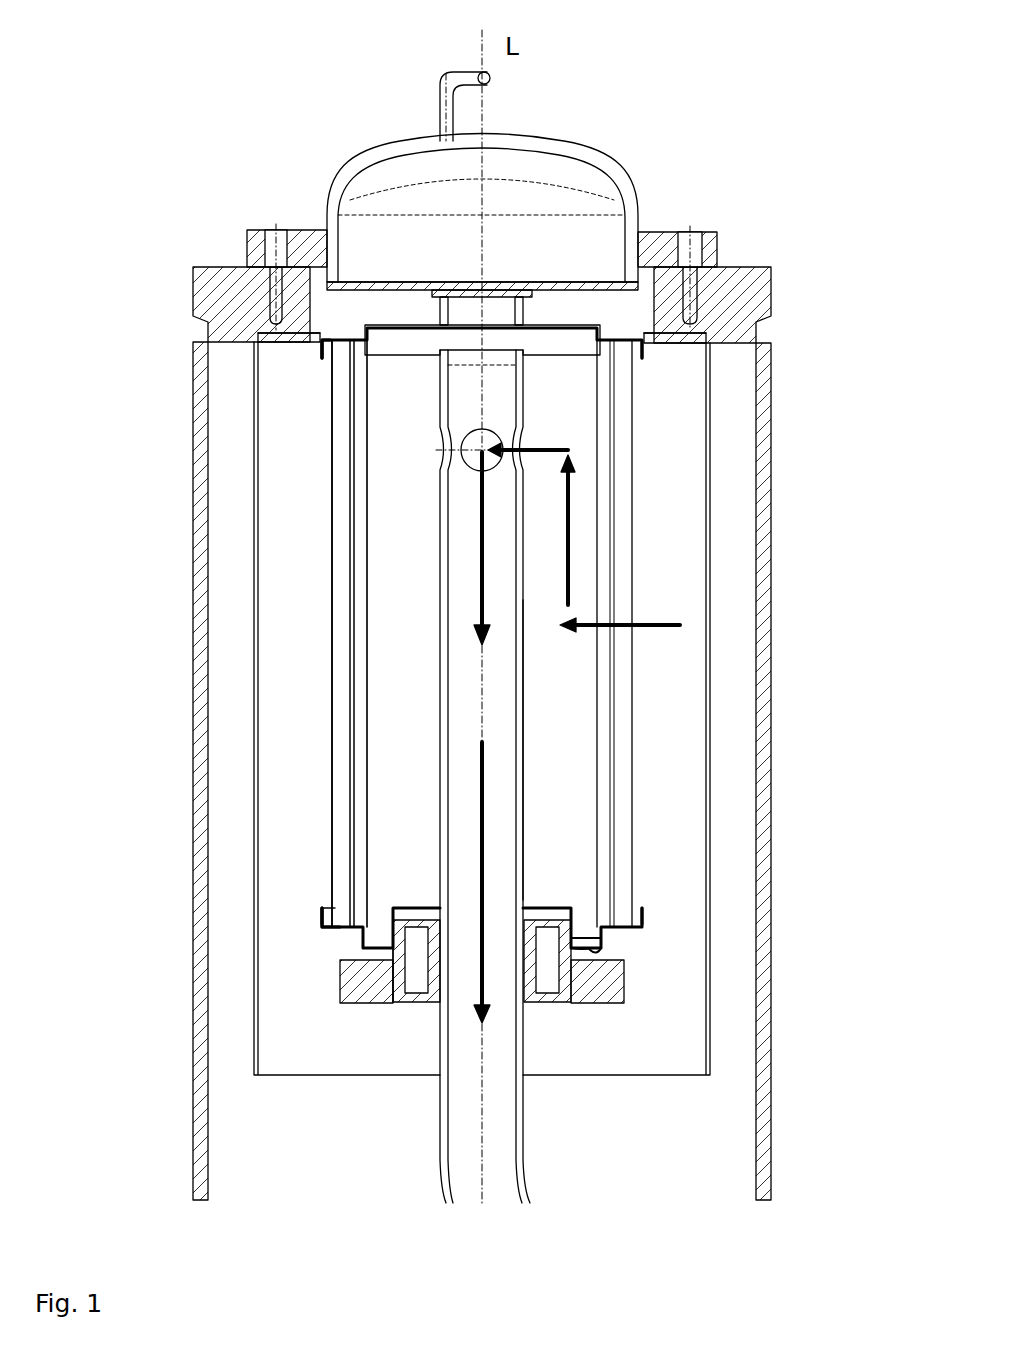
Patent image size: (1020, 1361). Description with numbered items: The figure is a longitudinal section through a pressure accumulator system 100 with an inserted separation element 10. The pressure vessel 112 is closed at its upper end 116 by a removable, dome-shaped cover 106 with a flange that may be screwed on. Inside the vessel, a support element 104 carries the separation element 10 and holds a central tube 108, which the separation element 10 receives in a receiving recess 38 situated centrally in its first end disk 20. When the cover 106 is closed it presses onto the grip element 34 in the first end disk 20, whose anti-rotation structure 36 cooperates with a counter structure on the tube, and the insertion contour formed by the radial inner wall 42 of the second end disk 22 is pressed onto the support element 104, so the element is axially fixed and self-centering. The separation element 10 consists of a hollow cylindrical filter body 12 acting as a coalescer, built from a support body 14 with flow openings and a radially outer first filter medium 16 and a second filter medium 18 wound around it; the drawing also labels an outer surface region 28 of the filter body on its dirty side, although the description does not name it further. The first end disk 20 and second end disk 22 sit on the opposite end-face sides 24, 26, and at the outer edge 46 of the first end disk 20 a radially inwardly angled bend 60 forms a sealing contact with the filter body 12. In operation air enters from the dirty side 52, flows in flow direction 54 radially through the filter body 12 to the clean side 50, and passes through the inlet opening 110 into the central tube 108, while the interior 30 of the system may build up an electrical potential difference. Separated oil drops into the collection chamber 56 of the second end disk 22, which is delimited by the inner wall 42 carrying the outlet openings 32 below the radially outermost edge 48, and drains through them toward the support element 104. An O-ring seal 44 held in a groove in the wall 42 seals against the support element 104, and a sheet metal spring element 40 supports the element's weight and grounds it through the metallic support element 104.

The pressure accumulator system 100 is at (742, 98).
The separation element 10 is at (318, 540).
The filter body 12 is at (482, 633).
The support body 14 is at (363, 623).
The first filter medium 16 is at (360, 768).
The second filter medium 18 is at (340, 710).
The first end disk 20 is at (388, 325).
The second end disk 22 is at (352, 930).
The end-face side 24 is at (338, 330).
The end-face side 26 is at (333, 937).
The outer surface of filter medium 28 is at (333, 474).
The interior 30 is at (385, 534).
The outlet openings 32 is at (392, 912).
The grip element 34 is at (510, 325).
The anti-rotation structure 36 is at (530, 307).
The receiving recess 38 is at (500, 280).
The spring element 40 is at (602, 953).
The radial inner wall 42 is at (568, 957).
The seal 44 is at (397, 950).
The outer edge 46 is at (290, 347).
The radially outermost edge 48 is at (300, 912).
The clean side 50 is at (467, 714).
The dirty side 52 is at (653, 591).
The flow direction 54 is at (690, 625).
The collection chamber 56 is at (585, 942).
The radially inwardly angled bend 60 is at (313, 340).
The support element 104 is at (623, 982).
The cover 106 is at (637, 200).
The central tube 108 is at (528, 780).
The inlet opening 110 is at (528, 474).
The pressure vessel 112 is at (772, 403).
The upper end 116 is at (500, 335).